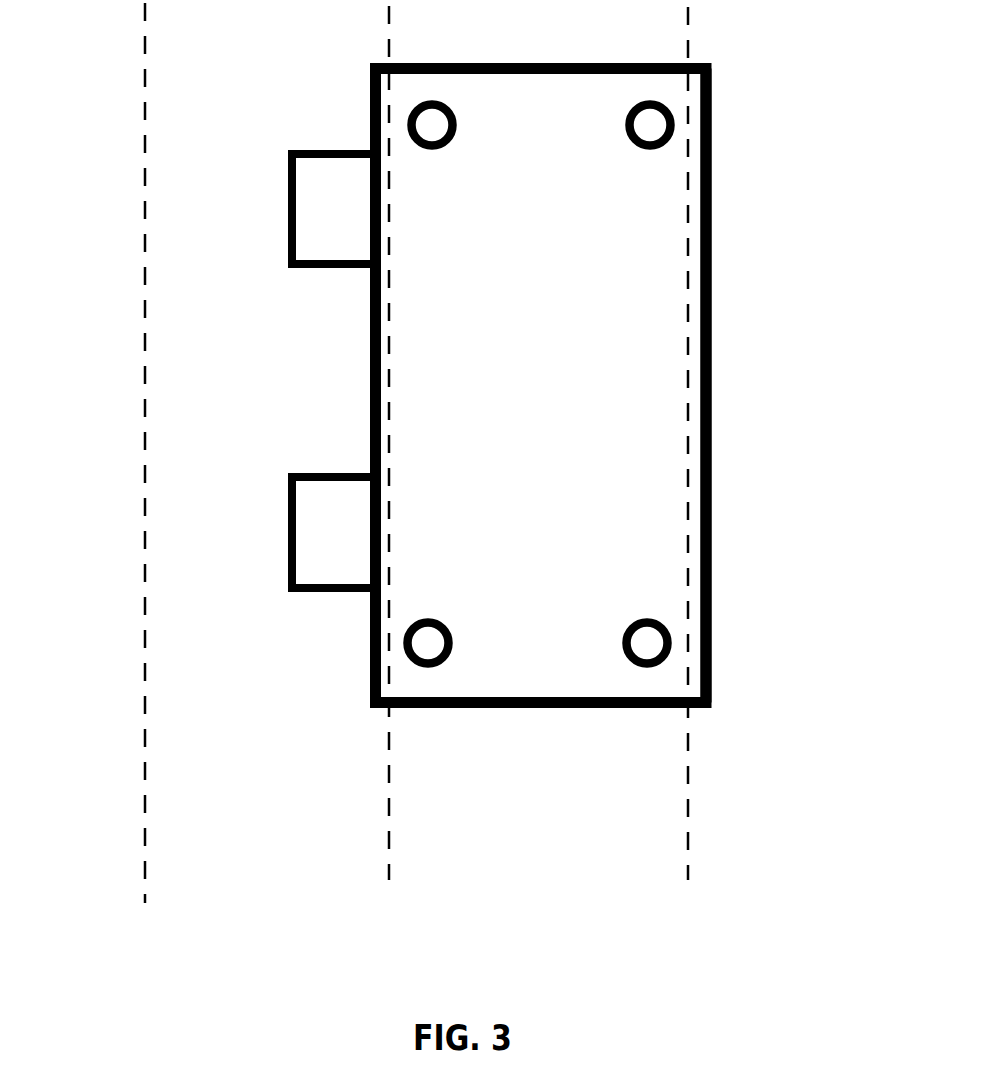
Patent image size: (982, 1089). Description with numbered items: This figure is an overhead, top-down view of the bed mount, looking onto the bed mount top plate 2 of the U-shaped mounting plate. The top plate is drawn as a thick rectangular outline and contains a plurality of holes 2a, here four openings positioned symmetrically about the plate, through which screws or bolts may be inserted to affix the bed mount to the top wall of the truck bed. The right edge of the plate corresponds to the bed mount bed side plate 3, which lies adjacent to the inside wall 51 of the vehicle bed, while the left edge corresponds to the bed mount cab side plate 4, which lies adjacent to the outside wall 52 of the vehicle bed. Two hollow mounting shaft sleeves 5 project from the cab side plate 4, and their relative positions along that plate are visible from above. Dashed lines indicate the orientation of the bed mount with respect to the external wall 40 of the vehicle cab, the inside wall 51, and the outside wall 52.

The bed mount top plate 2 is at (543, 485).
The holes 2a is at (428, 645).
The bed mount bed side plate 3 is at (712, 350).
The bed mount cab side plate 4 is at (370, 647).
The mounting shaft sleeves 5 is at (288, 533).
The external wall 40 is at (145, 818).
The inside wall 51 is at (688, 830).
The outside wall 52 is at (388, 828).